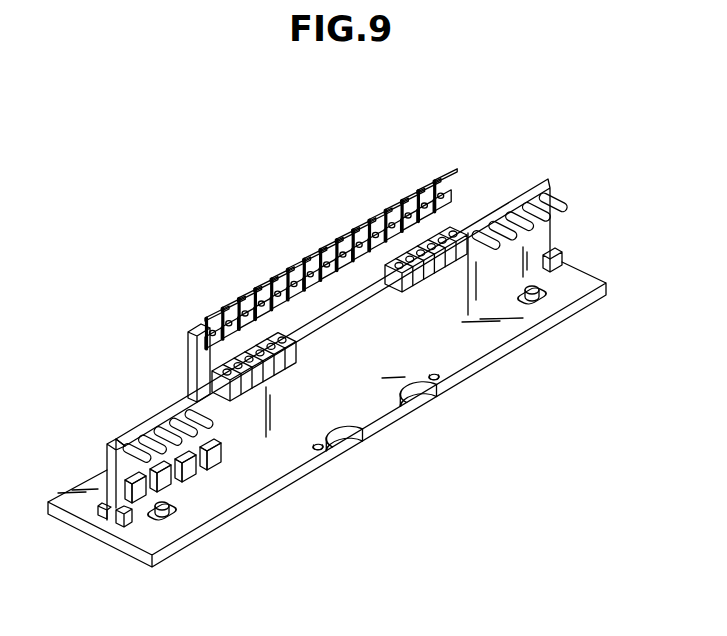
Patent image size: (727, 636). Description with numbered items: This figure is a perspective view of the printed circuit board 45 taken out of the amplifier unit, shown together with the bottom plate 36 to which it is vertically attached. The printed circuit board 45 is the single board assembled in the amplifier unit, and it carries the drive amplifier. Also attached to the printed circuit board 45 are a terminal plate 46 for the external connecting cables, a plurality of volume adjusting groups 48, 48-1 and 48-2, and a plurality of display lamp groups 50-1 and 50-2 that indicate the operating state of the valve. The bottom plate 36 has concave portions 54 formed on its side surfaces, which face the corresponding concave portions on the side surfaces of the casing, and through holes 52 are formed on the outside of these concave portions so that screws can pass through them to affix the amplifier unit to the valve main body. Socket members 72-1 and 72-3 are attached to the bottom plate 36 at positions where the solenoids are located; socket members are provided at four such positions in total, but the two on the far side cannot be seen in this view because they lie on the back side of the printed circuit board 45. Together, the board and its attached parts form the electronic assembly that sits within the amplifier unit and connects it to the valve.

The bottom plate 36 is at (566, 287).
The printed circuit board 45 is at (114, 441).
The terminal plate 46 is at (289, 270).
The volume adjusting group 48 is at (343, 282).
The volume adjusting group 48-1 is at (226, 357).
The volume adjusting group 48-2 is at (460, 222).
The display lamp group 50-1 is at (128, 457).
The display lamp group 50-2 is at (567, 205).
The through holes 52 is at (318, 452).
The concave portions 54 is at (348, 447).
The socket member 72-1 is at (165, 517).
The socket member 72-3 is at (538, 302).